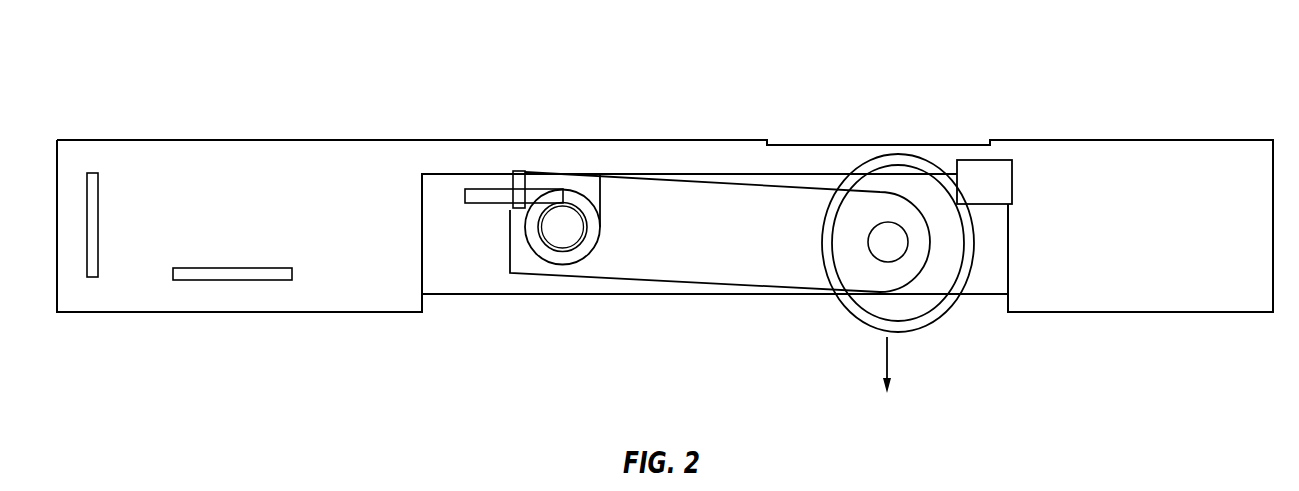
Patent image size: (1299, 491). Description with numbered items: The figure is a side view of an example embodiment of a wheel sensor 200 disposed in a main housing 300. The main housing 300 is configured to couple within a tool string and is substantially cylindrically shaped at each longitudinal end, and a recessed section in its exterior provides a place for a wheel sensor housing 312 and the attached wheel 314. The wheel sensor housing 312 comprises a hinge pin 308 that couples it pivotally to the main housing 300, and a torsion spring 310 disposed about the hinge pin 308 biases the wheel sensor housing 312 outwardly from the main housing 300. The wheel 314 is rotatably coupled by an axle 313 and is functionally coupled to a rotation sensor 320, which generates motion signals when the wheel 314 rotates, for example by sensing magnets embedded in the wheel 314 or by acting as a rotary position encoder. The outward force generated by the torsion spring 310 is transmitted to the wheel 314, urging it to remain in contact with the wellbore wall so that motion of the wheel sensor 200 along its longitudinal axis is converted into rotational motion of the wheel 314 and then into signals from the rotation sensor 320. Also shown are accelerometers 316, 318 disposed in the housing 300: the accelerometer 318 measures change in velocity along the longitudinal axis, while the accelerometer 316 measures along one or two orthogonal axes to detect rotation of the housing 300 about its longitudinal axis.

The wheel sensor 200 is at (762, 48).
The main housing 300 is at (470, 140).
The hinge pin 308 is at (560, 235).
The torsion spring 310 is at (495, 205).
The wheel sensor housing 312 is at (748, 274).
The axle 313 is at (888, 247).
The wheel 314 is at (850, 322).
The accelerometer 316 is at (95, 280).
The accelerometer 318 is at (272, 282).
The rotation sensor 320 is at (968, 158).